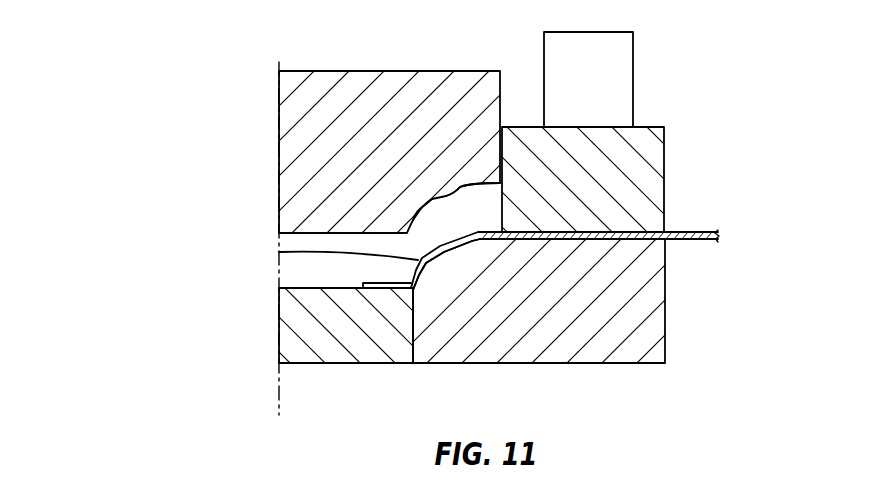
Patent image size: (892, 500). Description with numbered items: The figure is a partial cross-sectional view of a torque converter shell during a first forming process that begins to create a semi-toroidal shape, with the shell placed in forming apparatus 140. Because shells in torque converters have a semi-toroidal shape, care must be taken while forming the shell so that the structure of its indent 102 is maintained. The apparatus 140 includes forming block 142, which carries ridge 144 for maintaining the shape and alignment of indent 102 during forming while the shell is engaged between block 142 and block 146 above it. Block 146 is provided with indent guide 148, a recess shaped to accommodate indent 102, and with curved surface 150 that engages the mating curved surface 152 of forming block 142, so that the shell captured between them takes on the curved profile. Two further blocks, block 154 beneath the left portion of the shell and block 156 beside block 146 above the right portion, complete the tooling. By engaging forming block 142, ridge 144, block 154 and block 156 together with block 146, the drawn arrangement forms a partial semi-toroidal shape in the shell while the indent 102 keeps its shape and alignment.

The forming apparatus 140 is at (207, 211).
The block 146 is at (305, 120).
The indent guide 148 is at (427, 205).
The curved surface 150 is at (453, 190).
The block 156 is at (645, 143).
The indent 102 is at (279, 253).
The block 154 is at (331, 352).
The forming block 142 is at (644, 303).
The ridge 144 is at (427, 262).
The curved surface 152 is at (483, 237).